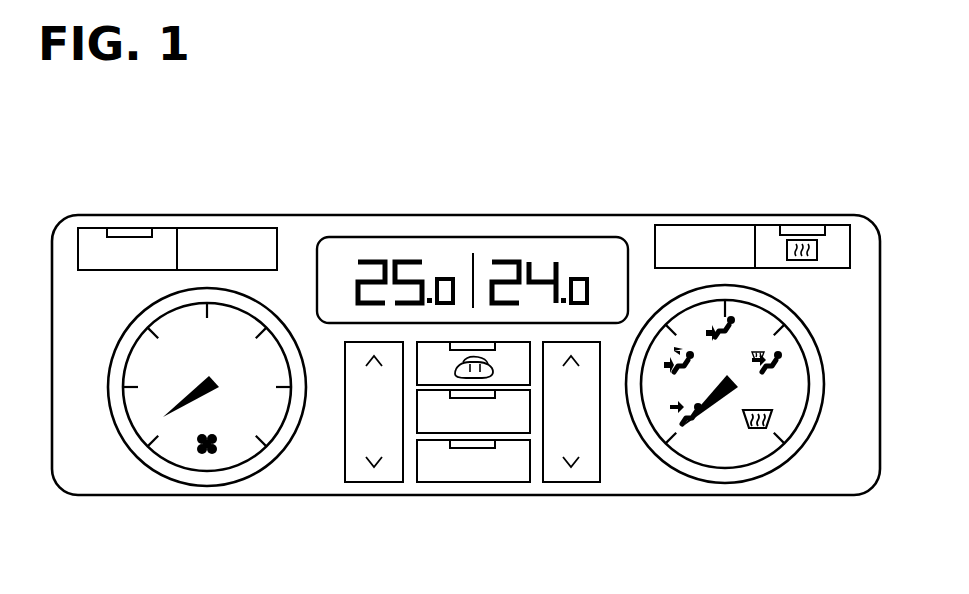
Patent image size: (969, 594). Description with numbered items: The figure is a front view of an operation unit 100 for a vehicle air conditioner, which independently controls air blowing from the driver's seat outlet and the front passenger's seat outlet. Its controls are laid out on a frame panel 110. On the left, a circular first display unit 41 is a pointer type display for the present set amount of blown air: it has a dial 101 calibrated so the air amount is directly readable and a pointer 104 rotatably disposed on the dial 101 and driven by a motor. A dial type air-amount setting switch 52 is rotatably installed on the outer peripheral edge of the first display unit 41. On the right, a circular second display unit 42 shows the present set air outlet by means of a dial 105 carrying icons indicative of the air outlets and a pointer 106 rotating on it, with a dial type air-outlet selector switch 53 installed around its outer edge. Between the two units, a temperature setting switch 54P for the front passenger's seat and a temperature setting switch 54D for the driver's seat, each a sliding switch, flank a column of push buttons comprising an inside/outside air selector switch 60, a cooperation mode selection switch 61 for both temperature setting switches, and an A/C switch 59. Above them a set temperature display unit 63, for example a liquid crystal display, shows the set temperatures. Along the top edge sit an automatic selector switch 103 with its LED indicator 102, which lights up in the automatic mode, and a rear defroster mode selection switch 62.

The operation unit 100 is at (637, 180).
The frame panel 110 is at (295, 240).
The automatic selector switch 103 is at (88, 252).
The LED indicator 102 is at (128, 228).
The set temperature display unit 63 is at (513, 237).
The rear defroster mode selection switch 62 is at (830, 228).
The air-amount setting switch 52 is at (115, 352).
The air-outlet selector switch 53 is at (797, 315).
The first display unit 41 is at (106, 442).
The second display unit 42 is at (814, 448).
The pointer 104 is at (193, 420).
The dial 101 is at (233, 444).
The temperature setting switch for the front passenger's seat 54P is at (367, 475).
The inside/outside air selector switch 60 is at (425, 358).
The cooperation mode selection switch 61 is at (522, 410).
The A/C switch 59 is at (475, 480).
The temperature setting switch for the driver's seat 54D is at (583, 470).
The pointer 106 is at (720, 398).
The dial 105 is at (738, 448).